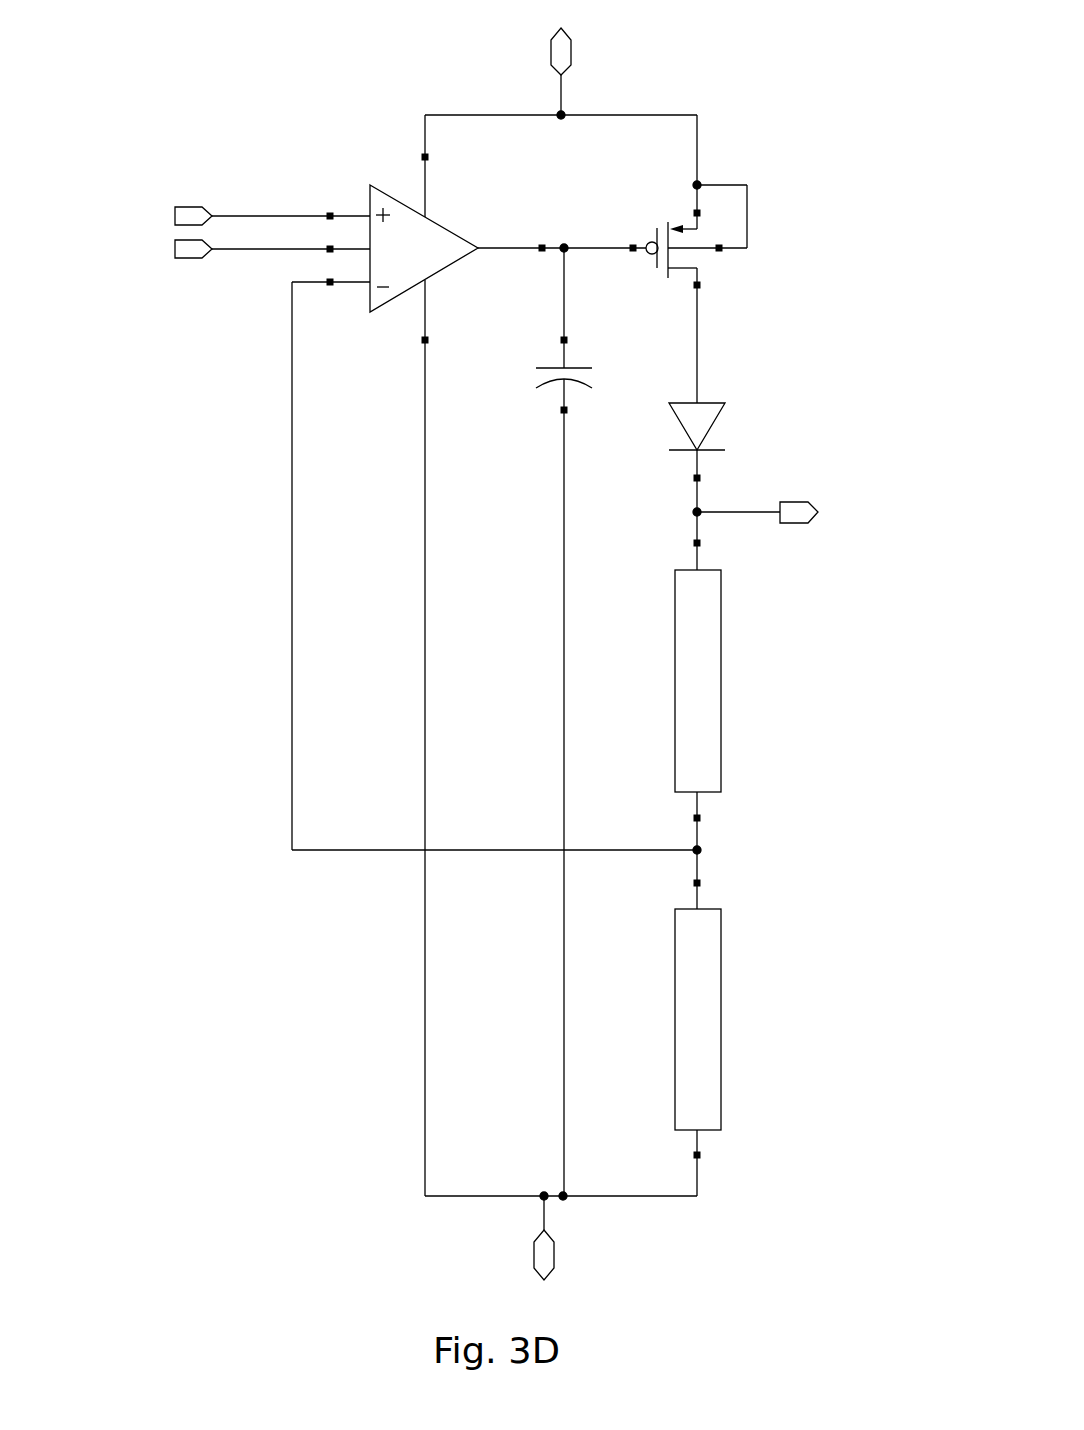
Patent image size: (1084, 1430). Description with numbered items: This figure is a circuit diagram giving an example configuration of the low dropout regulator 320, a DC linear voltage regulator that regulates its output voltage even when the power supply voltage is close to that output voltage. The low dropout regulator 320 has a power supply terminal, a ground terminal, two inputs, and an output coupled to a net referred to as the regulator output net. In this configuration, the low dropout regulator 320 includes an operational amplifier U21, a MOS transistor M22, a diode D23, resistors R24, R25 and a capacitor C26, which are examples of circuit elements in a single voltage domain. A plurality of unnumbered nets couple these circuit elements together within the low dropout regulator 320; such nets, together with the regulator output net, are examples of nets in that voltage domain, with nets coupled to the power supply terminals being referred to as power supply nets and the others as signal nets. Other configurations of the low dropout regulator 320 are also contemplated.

The low dropout regulator 320 is at (114, 66).
The operational amplifier U21 is at (415, 232).
The MOS transistor M22 is at (677, 259).
The diode D23 is at (724, 426).
The resistor R24 is at (727, 681).
The resistor R25 is at (727, 1019).
The capacitor C26 is at (536, 722).